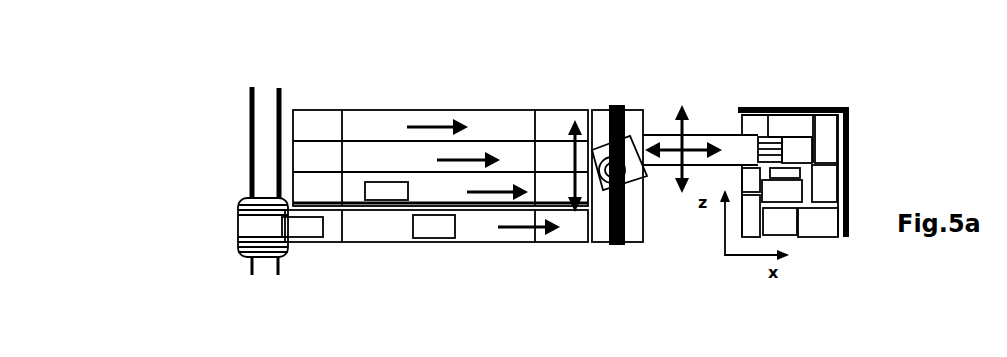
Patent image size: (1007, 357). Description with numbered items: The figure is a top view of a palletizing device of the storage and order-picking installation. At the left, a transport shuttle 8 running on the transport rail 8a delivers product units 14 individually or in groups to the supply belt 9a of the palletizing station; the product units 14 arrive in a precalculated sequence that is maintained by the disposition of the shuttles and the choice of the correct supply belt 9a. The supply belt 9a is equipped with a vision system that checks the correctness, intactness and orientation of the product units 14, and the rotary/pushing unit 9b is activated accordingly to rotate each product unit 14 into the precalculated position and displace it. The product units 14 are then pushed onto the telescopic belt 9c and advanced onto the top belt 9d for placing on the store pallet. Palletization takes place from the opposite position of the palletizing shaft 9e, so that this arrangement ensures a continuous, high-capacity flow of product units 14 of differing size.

The transport shuttle 8 is at (258, 253).
The transport rail 8a is at (279, 90).
The supply belt 9a is at (392, 118).
The rotary/pushing unit 9b is at (590, 137).
The telescopic belt 9c is at (702, 137).
The top belt 9d is at (770, 140).
The palletizing shaft 9e is at (848, 137).
The product unit 14 is at (302, 225).